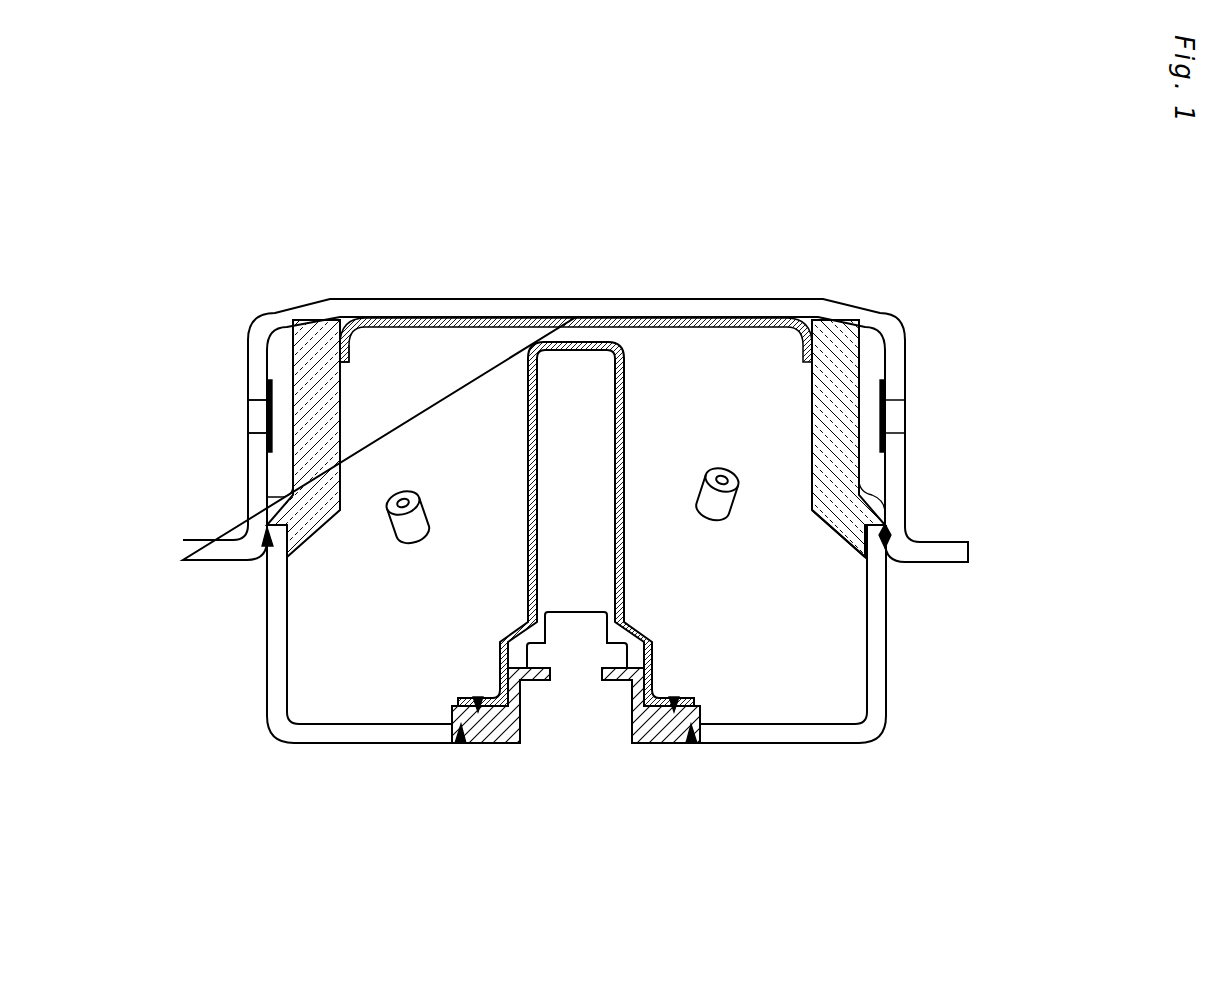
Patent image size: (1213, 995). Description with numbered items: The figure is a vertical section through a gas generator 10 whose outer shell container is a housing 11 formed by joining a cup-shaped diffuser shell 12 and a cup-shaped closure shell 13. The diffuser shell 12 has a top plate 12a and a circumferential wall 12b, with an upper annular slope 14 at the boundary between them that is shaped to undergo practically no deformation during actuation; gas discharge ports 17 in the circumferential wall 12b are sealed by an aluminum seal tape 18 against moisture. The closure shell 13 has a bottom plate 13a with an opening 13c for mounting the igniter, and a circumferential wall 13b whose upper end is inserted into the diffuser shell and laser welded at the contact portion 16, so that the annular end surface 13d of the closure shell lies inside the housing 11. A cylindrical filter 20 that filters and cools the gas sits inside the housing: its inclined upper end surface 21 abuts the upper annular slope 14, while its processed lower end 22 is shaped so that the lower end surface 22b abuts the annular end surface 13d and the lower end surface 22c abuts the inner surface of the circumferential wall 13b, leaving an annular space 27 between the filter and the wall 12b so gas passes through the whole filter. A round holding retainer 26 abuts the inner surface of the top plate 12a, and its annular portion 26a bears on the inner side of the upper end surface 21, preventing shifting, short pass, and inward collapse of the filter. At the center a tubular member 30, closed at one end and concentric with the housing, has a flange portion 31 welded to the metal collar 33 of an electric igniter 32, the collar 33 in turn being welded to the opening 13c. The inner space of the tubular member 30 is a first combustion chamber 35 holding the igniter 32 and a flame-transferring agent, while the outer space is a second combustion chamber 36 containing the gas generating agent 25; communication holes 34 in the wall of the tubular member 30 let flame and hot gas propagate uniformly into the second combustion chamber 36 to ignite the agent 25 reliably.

The gas generator 10 is at (670, 234).
The housing 11 is at (1025, 280).
The diffuser shell 12 is at (902, 205).
The top plate 12a is at (787, 296).
The circumferential wall 12b is at (905, 350).
The closure shell 13 is at (857, 842).
The bottom plate 13a is at (805, 735).
The circumferential wall 13b is at (880, 683).
The opening 13c is at (460, 743).
The annular end surface 13d is at (268, 525).
The upper annular slope 14 is at (280, 310).
The contact portion (welded portion) 16 is at (887, 548).
The gas discharge ports 17 is at (258, 420).
The aluminum seal tape 18 is at (280, 390).
The cylindrical filter 20 is at (320, 320).
The upper end surface 21 is at (307, 320).
The second insulator 22 is at (848, 438).
The lower end surface 22b is at (875, 543).
The lower end surface 22c is at (885, 515).
The gas generating agent 25 is at (427, 517).
The holding retainer 26 is at (470, 318).
The annular portion 26a is at (347, 352).
The annular space 27 is at (872, 468).
The tubular member 30 is at (577, 342).
The flange portion 31 is at (488, 700).
The electric igniter 32 is at (565, 737).
The metal collar 33 is at (490, 735).
The communication holes 34 is at (625, 392).
The first combustion chamber 35 is at (560, 433).
The second combustion chamber 36 is at (728, 433).